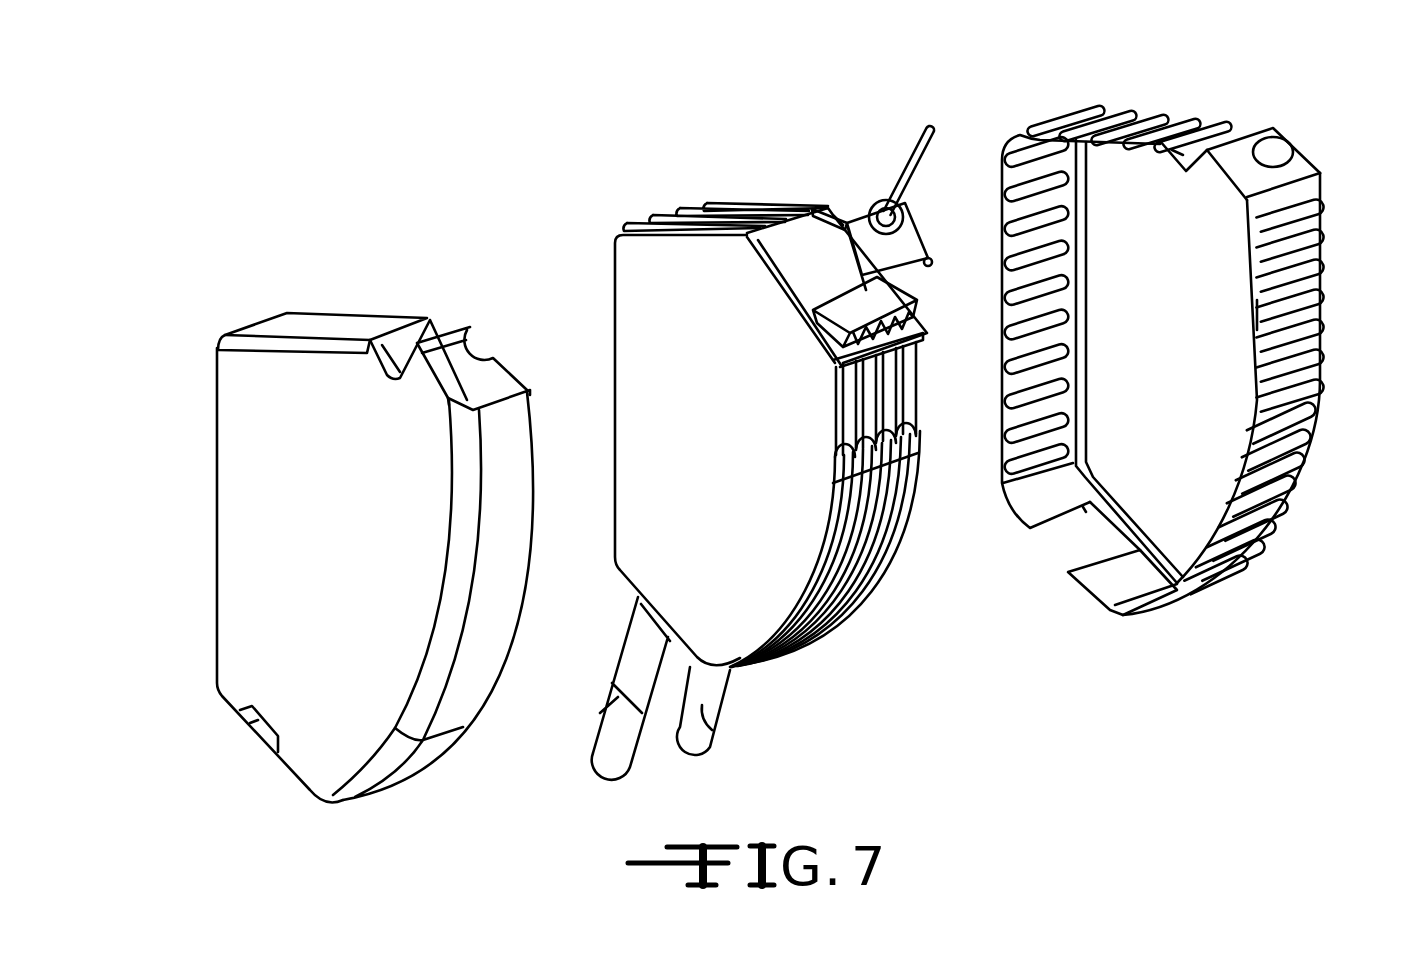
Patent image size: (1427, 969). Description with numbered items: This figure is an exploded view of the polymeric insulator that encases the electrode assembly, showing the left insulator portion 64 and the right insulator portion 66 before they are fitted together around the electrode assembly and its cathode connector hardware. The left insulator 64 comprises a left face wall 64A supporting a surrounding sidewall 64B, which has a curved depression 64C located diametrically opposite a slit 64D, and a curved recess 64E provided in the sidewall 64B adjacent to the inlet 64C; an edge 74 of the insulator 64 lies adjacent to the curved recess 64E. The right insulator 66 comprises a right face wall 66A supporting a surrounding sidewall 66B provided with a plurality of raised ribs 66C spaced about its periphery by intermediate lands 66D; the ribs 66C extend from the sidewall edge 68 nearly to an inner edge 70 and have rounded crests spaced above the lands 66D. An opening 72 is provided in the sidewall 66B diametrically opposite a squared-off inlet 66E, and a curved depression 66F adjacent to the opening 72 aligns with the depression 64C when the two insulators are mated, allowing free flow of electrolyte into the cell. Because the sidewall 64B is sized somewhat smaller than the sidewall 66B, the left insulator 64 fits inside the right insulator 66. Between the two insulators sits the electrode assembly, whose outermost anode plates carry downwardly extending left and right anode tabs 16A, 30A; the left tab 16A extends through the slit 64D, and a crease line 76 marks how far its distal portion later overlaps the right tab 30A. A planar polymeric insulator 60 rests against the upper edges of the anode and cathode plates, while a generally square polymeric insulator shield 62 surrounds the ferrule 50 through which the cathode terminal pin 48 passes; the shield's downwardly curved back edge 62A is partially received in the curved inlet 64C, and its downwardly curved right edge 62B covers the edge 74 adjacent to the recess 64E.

The left anode tab 16A is at (636, 647).
The right anode tab 30A is at (702, 712).
The cathode terminal pin 48 is at (910, 150).
The ferrule 50 is at (897, 215).
The planar polymeric insulator 60 is at (745, 429).
The polymeric insulator shield 62 is at (884, 224).
The downwardly curved back edge 62A is at (856, 215).
The downwardly curved right edge 62B is at (931, 266).
The left insulator portion 64 is at (326, 515).
The left face wall 64A is at (240, 560).
The surrounding sidewall 64B is at (327, 318).
The curved depression 64C is at (423, 320).
The slit 64D is at (255, 727).
The curved recess 64E is at (482, 346).
The right insulator portion 66 is at (1196, 358).
The right face wall 66A is at (1180, 383).
The surrounding sidewall 66B is at (1112, 600).
The raised ribs 66C is at (1300, 300).
The intermediate lands 66D is at (1330, 365).
The squared-off inlet 66E is at (1083, 533).
The curved depression 66F is at (1207, 120).
The sidewall edge 68 is at (1253, 303).
The inner edge 70 is at (1323, 197).
The opening 72 is at (1275, 152).
The edge 74 is at (537, 478).
The crease line 76 is at (613, 697).